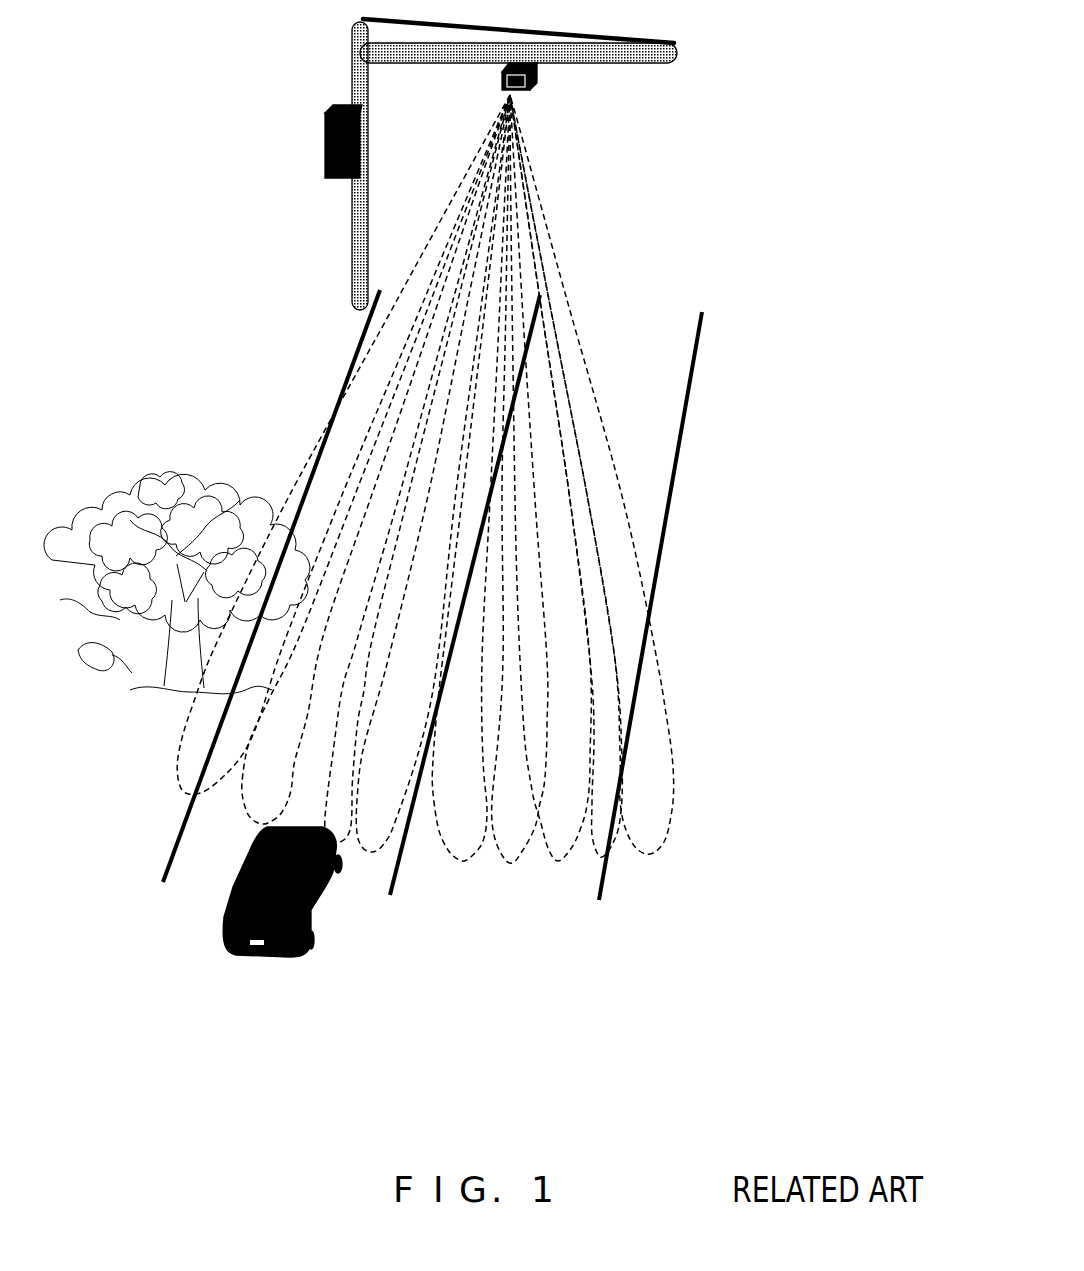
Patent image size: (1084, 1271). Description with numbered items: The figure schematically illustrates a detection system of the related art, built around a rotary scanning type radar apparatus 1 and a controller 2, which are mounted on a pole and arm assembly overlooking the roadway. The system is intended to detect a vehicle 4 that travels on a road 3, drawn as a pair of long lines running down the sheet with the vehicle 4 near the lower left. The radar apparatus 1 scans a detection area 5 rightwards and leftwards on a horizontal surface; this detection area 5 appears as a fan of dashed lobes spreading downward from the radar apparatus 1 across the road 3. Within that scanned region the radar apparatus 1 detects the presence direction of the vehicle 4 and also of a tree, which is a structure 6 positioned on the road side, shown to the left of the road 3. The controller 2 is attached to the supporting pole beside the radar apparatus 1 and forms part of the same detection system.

The radar apparatus 1 is at (538, 80).
The controller 2 is at (325, 135).
The road 3 is at (690, 368).
The vehicle 4 is at (310, 907).
The detection area 5 is at (665, 711).
The structure 6 is at (163, 488).